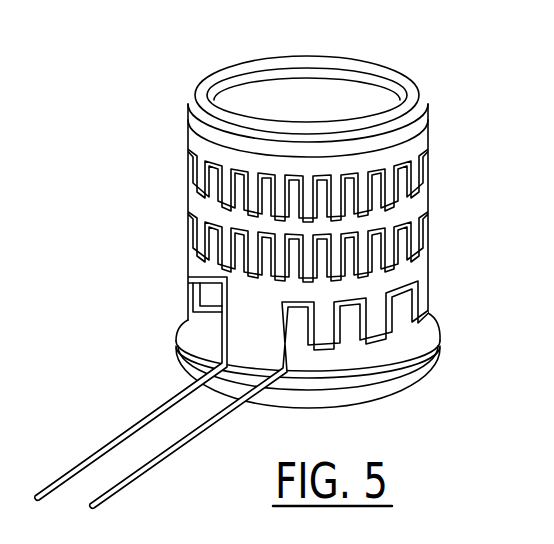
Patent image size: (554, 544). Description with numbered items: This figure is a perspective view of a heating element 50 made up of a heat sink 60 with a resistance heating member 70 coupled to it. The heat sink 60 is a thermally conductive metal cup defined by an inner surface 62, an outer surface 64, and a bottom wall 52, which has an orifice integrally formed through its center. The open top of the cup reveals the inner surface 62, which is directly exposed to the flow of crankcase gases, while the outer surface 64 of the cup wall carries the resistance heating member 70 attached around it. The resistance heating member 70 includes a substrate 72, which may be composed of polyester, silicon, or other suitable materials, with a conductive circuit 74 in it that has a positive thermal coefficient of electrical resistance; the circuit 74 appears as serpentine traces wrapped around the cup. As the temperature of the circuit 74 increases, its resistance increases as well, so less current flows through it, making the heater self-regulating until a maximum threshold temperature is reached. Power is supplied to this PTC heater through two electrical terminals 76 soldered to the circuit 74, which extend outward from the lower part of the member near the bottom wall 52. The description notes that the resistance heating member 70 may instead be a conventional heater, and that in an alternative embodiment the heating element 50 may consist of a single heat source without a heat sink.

The heating element 50 is at (294, 255).
The bottom wall 52 is at (386, 389).
The heat sink 60 is at (400, 72).
The inner surface 62 is at (306, 86).
The outer surface 64 is at (433, 110).
The resistance heating member 70 is at (432, 112).
The substrate 72 is at (423, 262).
The conductive circuit 74 is at (269, 326).
The electrical terminals 76 is at (197, 428).